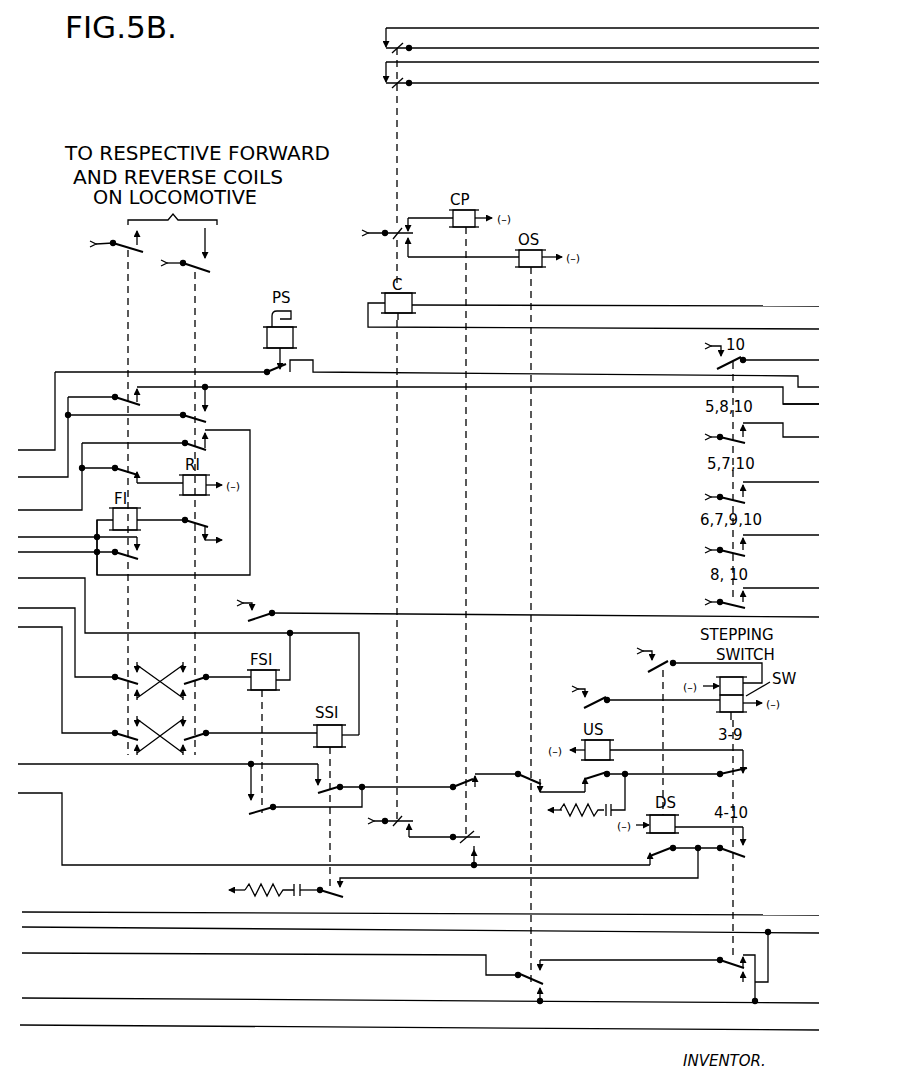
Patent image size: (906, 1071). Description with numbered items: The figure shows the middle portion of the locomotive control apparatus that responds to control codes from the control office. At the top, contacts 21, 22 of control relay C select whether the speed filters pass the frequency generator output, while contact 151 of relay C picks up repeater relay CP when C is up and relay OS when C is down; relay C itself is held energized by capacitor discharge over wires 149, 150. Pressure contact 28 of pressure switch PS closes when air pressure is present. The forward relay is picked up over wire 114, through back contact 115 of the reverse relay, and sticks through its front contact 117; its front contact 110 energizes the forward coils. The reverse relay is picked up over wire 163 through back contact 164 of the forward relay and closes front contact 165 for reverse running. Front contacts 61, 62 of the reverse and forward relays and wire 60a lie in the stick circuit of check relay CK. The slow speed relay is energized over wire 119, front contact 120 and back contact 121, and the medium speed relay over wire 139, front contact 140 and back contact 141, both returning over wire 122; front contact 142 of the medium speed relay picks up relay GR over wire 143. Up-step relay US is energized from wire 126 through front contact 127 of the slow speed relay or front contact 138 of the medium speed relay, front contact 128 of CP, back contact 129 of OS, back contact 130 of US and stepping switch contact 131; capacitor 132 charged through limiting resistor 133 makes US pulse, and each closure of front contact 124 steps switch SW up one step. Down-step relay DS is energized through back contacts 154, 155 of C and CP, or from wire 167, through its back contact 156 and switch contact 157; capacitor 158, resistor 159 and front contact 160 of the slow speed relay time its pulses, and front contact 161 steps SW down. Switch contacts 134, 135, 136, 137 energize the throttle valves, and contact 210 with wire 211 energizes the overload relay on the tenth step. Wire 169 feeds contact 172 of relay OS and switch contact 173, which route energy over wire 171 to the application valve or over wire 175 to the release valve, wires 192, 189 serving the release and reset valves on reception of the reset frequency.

The front contact 21 is at (412, 46).
The contact 22 is at (401, 85).
The contact 151 is at (393, 230).
The wire 149 is at (815, 306).
The wire 150 is at (815, 329).
The contact 28 is at (265, 370).
The front contact 62 is at (125, 395).
The front contact 61 is at (192, 413).
The wire 163 is at (22, 512).
The back contact 164 is at (127, 474).
The back contact 115 is at (200, 526).
The wire 114 is at (66, 538).
The front contact 117 is at (140, 557).
The wire 122 is at (22, 584).
The wire 139 is at (22, 614).
The wire 119 is at (56, 618).
The front contact 142 is at (266, 614).
The wire 143 is at (655, 615).
The front contact 140 is at (122, 680).
The back contact 141 is at (204, 684).
The front contact 120 is at (122, 736).
The back contact 121 is at (204, 740).
The wire 126 is at (67, 763).
The front contact 127 is at (334, 790).
The front contact 138 is at (305, 811).
The wire 167 is at (22, 797).
The front contact 128 is at (452, 783).
The back contact 129 is at (516, 772).
The back contact 130 is at (602, 778).
The contact 131 is at (717, 773).
The limiting resistor 133 is at (580, 812).
The capacitor 132 is at (605, 817).
The back contact 154 is at (379, 832).
The back contact 155 is at (456, 840).
The front contact 124 is at (594, 699).
The front contact 161 is at (650, 662).
The back contact 156 is at (685, 860).
The contact 157 is at (744, 858).
The front contact 160 is at (344, 898).
The capacitor 158 is at (300, 893).
The limiting resistor 159 is at (265, 881).
The front contact 210 is at (748, 360).
The wire 211 is at (782, 368).
The wire 60a is at (814, 404).
The contact 134 is at (751, 435).
The contact 135 is at (751, 495).
The contact 136 is at (751, 548).
The contact 137 is at (751, 600).
The wire 169 is at (86, 911).
The wire 171 is at (48, 929).
The contact 172 is at (516, 978).
The contact 173 is at (718, 963).
The wire 175 is at (812, 1001).
The wire 192 is at (36, 999).
The wire 189 is at (32, 1026).
The front contact 110 is at (120, 250).
The front contact 165 is at (203, 270).